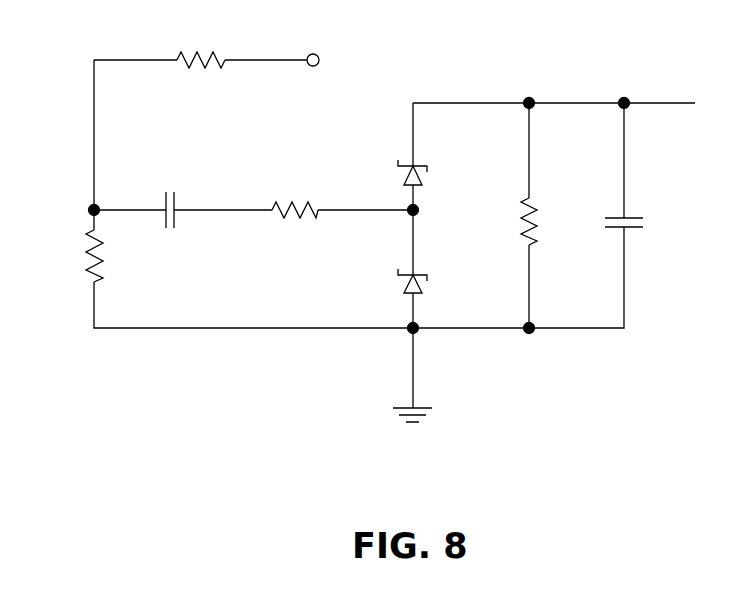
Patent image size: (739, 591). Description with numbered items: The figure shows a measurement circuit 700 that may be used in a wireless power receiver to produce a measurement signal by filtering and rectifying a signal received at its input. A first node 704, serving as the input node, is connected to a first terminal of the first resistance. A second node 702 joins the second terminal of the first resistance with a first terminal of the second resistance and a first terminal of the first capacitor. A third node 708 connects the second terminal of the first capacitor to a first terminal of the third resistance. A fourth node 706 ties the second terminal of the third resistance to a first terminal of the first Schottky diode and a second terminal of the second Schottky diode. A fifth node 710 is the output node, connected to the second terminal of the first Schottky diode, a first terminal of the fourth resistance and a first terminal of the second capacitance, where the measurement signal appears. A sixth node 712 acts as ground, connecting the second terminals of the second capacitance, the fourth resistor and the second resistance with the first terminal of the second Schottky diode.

The measurement circuit 700 is at (415, 490).
The second node 702 is at (90, 207).
The first node 704 is at (318, 64).
The fourth node 706 is at (408, 210).
The third node 708 is at (220, 212).
The fifth node 710 is at (529, 100).
The sixth node 712 is at (416, 331).